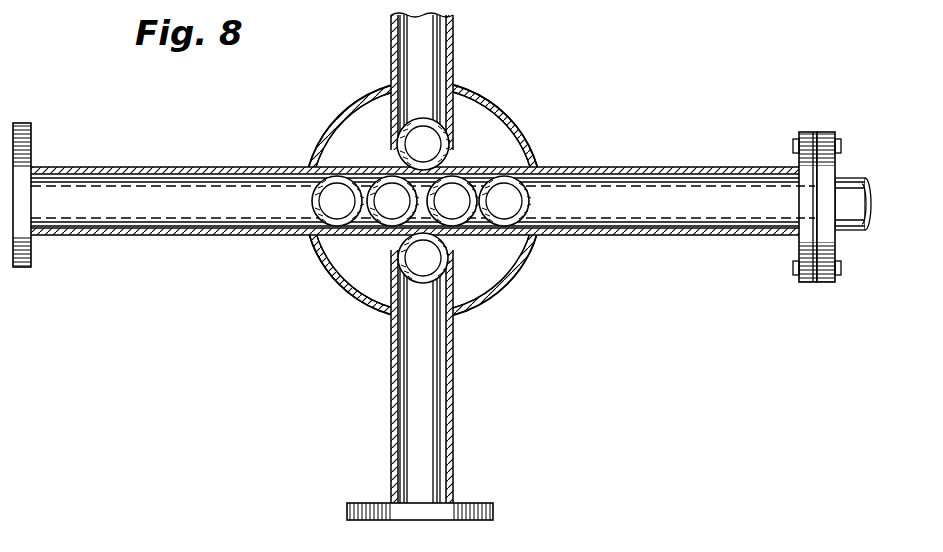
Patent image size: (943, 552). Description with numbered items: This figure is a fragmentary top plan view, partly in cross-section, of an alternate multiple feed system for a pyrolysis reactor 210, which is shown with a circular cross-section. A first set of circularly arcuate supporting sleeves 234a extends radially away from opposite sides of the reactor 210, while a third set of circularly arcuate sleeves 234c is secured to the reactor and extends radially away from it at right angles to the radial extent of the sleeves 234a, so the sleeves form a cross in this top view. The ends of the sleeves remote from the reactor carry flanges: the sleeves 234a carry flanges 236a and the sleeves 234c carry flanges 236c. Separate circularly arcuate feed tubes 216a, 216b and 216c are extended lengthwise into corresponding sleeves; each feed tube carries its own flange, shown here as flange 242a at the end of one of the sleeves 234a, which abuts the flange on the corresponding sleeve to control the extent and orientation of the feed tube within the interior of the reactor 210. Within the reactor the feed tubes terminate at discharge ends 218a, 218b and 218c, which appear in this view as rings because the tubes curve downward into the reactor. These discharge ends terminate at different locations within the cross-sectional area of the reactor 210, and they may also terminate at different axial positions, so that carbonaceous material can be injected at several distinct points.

The pyrolysis reactor 210 is at (503, 290).
The first set of circularly arcuate supporting sleeves 234a is at (125, 167).
The circularly arcuate feed tube 216a is at (137, 222).
The third set of circularly arcuate sleeves 234c is at (455, 63).
The circularly arcuate feed tube 216c is at (410, 50).
The discharge end of feed tube 218a is at (337, 176).
The discharge end of feed tube 218b is at (450, 175).
The discharge end of feed tube 218c is at (445, 261).
The circularly arcuate feed tube 216b is at (363, 224).
The flange 236a is at (30, 207).
The mating flange with bolts 242a is at (835, 163).
The flange 236c is at (470, 503).